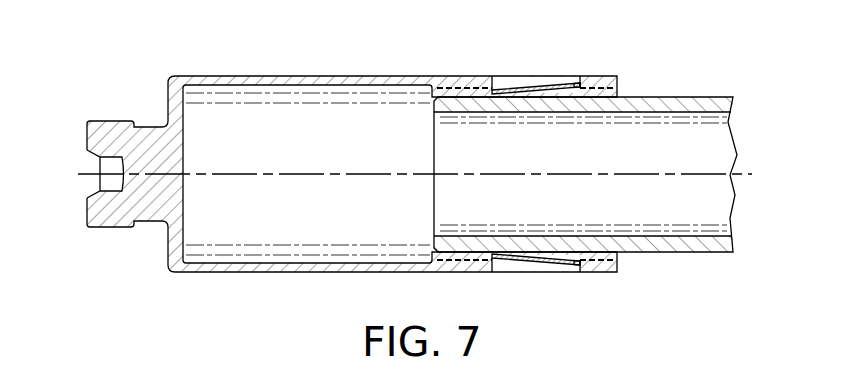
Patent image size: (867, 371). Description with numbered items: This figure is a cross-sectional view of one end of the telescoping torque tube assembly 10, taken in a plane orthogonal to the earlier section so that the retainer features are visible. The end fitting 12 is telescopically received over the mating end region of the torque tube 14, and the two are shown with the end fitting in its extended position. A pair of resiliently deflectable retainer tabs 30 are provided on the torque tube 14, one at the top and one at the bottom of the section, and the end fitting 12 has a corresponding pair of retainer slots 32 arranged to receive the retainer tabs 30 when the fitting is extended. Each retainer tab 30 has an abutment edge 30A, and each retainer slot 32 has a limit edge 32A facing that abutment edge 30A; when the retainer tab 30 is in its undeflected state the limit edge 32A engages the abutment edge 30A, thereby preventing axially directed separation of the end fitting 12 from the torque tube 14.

The telescoping torque tube assembly 10 is at (415, 171).
The end fitting 12 is at (303, 76).
The torque tube 14 is at (666, 97).
The retainer tab 30 is at (526, 171).
The abutment edge 30A is at (580, 95).
The retainer slot 32 is at (543, 82).
The limit edge 32A is at (579, 84).